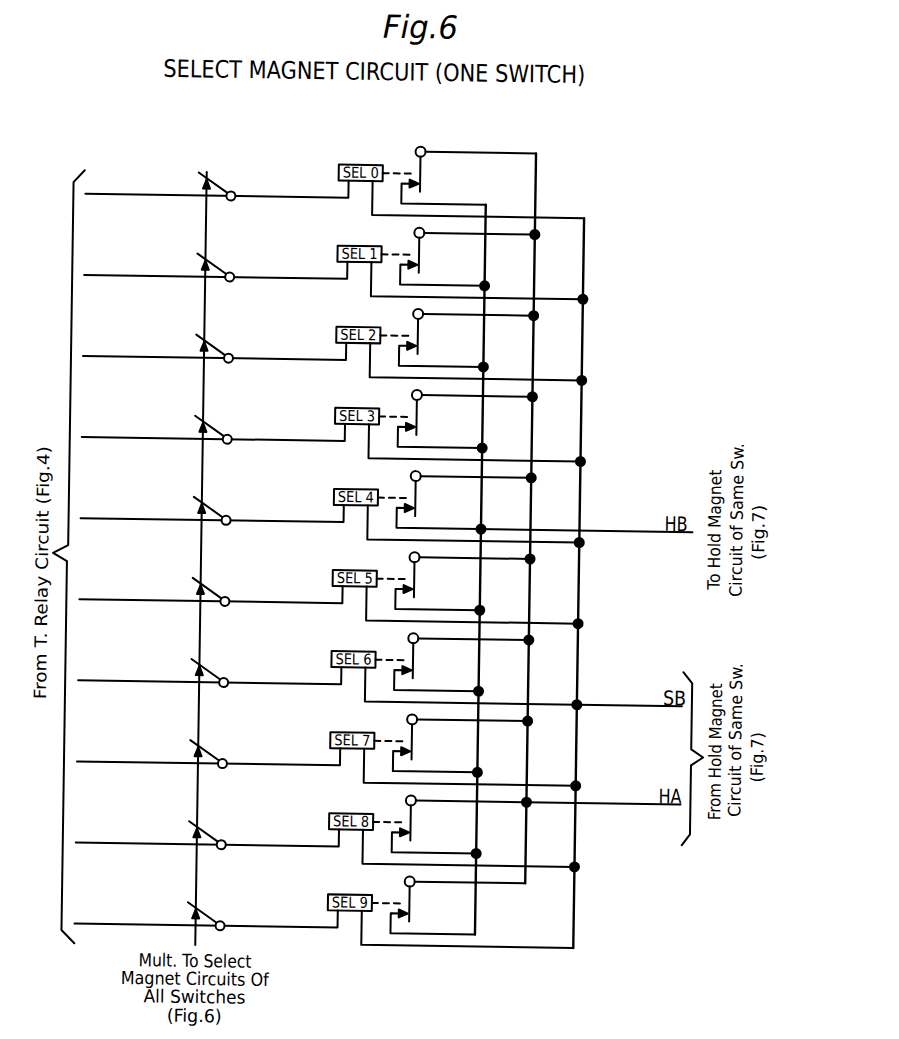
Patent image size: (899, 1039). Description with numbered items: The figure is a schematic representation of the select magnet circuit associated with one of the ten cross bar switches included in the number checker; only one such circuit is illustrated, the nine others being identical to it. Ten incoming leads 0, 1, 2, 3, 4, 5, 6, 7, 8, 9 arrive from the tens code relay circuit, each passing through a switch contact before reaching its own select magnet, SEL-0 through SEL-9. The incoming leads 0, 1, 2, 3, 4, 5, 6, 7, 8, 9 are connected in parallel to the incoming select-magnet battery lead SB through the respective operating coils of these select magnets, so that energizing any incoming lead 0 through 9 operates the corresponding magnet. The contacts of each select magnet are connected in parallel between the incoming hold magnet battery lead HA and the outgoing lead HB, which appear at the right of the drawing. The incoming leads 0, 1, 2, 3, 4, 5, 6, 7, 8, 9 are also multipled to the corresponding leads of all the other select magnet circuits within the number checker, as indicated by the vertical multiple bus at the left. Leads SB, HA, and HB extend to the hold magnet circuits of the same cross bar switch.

The incoming lead 0 is at (216, 186).
The incoming lead 1 is at (215, 267).
The incoming lead 2 is at (214, 348).
The incoming lead 3 is at (213, 429).
The incoming lead 4 is at (212, 510).
The incoming lead 5 is at (210, 591).
The incoming lead 6 is at (209, 672).
The incoming lead 7 is at (208, 753).
The incoming lead 8 is at (207, 835).
The incoming lead 9 is at (206, 916).